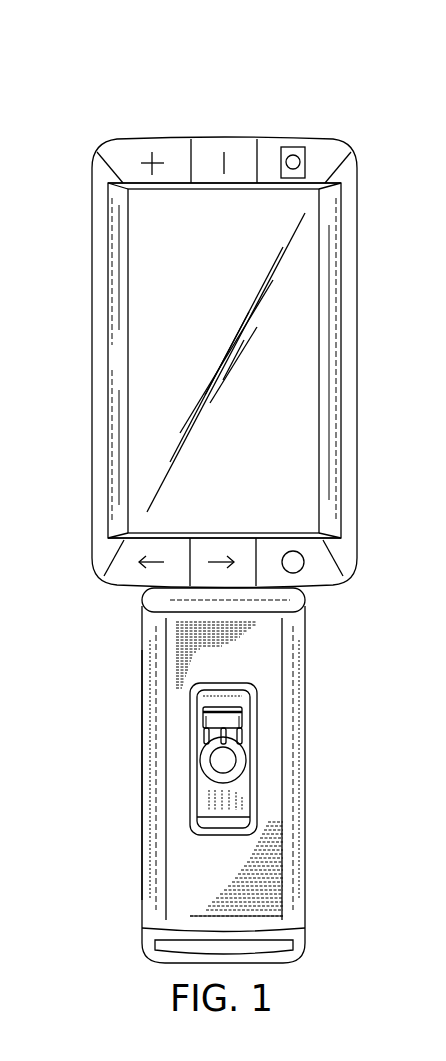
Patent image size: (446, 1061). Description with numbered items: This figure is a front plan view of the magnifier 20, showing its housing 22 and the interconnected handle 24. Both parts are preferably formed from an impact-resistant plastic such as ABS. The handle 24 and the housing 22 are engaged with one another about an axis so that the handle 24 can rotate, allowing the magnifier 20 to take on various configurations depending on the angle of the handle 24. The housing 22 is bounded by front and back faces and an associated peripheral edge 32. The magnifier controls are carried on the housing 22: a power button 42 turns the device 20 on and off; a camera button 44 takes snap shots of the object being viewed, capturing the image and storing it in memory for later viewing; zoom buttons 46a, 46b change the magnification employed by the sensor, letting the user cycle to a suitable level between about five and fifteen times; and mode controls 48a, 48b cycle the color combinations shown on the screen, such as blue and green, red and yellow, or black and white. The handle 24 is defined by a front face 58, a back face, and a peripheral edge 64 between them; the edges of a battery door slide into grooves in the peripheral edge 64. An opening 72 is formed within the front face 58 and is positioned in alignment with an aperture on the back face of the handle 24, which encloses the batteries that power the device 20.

The magnifier 20 is at (356, 72).
The housing 22 is at (345, 556).
The handle 24 is at (306, 759).
The peripheral edge 32 is at (358, 338).
The power button 42 is at (306, 572).
The camera button 44 is at (322, 153).
The zoom button 46a is at (122, 148).
The zoom button 46b is at (238, 145).
The mode control 48a is at (118, 560).
The mode control 48b is at (190, 572).
The front face 58 is at (268, 912).
The peripheral edge 64 is at (143, 816).
The opening 72 is at (246, 713).